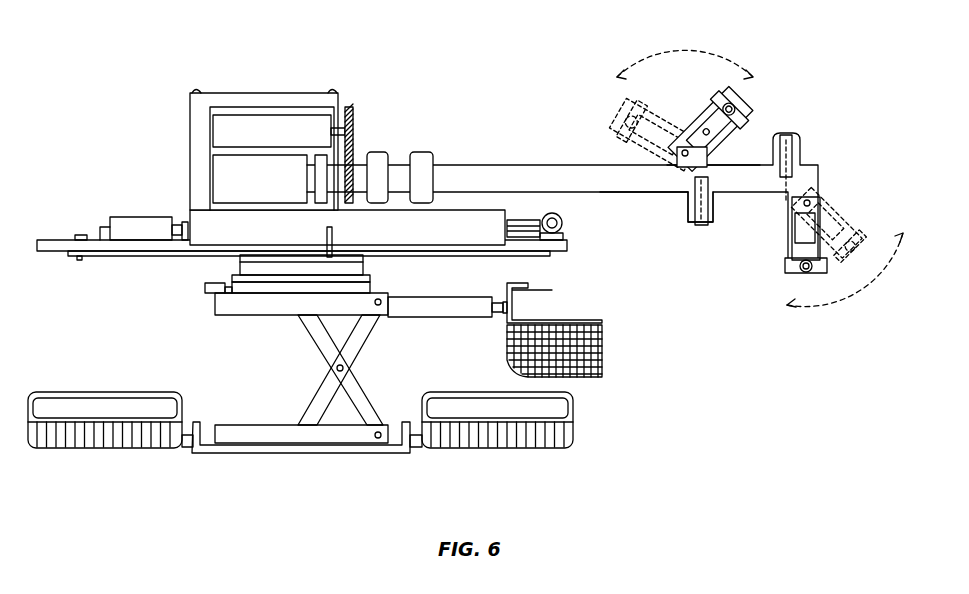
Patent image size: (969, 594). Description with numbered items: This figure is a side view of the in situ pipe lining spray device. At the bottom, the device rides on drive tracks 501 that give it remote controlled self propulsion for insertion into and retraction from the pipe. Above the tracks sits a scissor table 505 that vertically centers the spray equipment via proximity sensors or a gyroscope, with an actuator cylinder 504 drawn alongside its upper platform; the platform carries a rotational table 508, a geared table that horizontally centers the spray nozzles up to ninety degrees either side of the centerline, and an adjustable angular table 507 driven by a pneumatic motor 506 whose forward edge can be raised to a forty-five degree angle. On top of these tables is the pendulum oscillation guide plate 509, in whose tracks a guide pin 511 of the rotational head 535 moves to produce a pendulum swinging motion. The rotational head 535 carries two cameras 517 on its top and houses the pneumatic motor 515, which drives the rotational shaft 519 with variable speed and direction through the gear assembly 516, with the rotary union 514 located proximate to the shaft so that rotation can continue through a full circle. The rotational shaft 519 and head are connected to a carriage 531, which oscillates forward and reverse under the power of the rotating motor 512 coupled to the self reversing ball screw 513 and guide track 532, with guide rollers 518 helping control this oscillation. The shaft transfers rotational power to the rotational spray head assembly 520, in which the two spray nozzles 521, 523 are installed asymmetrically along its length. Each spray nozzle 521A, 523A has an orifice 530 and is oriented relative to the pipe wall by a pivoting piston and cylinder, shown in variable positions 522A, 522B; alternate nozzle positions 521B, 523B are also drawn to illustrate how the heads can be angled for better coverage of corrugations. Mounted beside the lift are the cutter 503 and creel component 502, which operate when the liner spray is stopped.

The drive tracks 501 is at (44, 443).
The creel component 502 is at (602, 358).
The cutter 503 is at (548, 290).
The actuator cylinder 504 is at (432, 307).
The scissor table 505 is at (320, 395).
The pneumatic motor 506 is at (205, 288).
The adjustable angular table 507 is at (370, 286).
The rotational table 508 is at (240, 266).
The pendulum oscillation guide plate 509 is at (106, 258).
The guide pin 511 is at (78, 238).
The rotating motor 512 is at (135, 216).
The self reversing ball screw 513 is at (183, 222).
The rotary union 514 is at (222, 170).
The pneumatic motor 515 is at (222, 133).
The gear assembly 516 is at (355, 112).
The cameras 517 is at (195, 91).
The guide rollers 518 is at (567, 236).
The rotational shaft 519 is at (512, 175).
The rotational spray head assembly 520 is at (612, 175).
The spray nozzle 521 is at (685, 52).
The spray nozzle 521A is at (730, 150).
The alternate position of spray nozzle 521B is at (663, 110).
The variable position of cylinder 522A is at (695, 215).
The variable position of cylinder 522B is at (715, 212).
The spray nozzle 523 is at (854, 290).
The spray nozzle 523A is at (792, 243).
The alternate position of spray nozzle 523B is at (832, 216).
The orifice 530 is at (740, 110).
The carriage 531 is at (347, 233).
The guide track 532 is at (540, 216).
The rotational head 535 is at (248, 100).